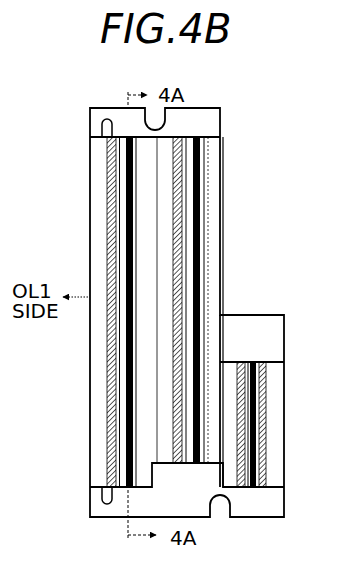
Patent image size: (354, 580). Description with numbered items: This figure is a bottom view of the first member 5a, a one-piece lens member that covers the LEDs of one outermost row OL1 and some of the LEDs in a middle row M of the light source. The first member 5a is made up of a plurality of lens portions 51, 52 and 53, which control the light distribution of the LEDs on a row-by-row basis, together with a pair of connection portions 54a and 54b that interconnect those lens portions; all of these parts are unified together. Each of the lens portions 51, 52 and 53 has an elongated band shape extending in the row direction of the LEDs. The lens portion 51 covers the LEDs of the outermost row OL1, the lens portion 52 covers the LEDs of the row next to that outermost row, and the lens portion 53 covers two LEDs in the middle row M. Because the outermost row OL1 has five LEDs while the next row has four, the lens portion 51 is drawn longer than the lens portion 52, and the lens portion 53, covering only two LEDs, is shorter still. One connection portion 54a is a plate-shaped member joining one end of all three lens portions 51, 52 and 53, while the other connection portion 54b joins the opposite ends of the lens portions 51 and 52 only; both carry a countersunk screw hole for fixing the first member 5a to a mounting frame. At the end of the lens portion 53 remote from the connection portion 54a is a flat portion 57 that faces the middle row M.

The first member 5a is at (74, 98).
The lens portion 51 is at (107, 195).
The lens portion 52 is at (208, 204).
The lens portion 53 is at (268, 435).
The connection portion 54a is at (284, 500).
The connection portion 54b is at (218, 121).
The flat portion 57 is at (284, 333).
The outermost row OL1 is at (122, 498).
The middle row M is at (254, 498).